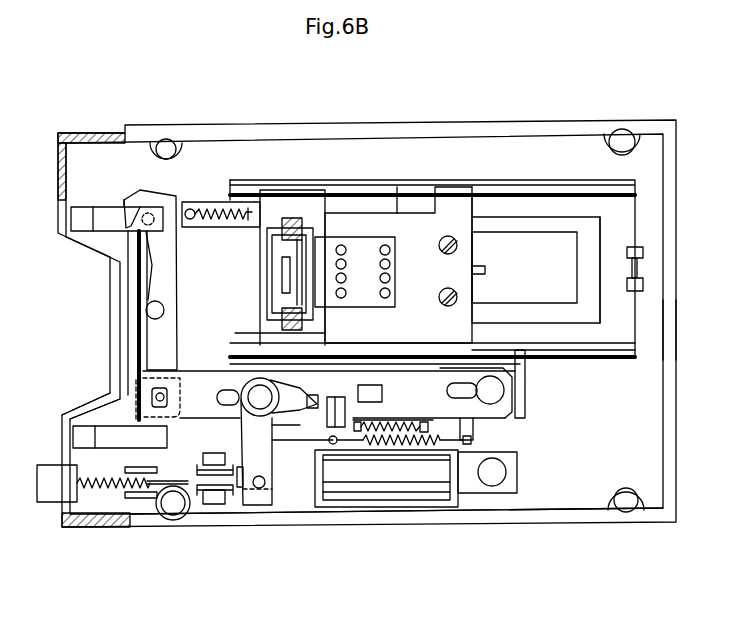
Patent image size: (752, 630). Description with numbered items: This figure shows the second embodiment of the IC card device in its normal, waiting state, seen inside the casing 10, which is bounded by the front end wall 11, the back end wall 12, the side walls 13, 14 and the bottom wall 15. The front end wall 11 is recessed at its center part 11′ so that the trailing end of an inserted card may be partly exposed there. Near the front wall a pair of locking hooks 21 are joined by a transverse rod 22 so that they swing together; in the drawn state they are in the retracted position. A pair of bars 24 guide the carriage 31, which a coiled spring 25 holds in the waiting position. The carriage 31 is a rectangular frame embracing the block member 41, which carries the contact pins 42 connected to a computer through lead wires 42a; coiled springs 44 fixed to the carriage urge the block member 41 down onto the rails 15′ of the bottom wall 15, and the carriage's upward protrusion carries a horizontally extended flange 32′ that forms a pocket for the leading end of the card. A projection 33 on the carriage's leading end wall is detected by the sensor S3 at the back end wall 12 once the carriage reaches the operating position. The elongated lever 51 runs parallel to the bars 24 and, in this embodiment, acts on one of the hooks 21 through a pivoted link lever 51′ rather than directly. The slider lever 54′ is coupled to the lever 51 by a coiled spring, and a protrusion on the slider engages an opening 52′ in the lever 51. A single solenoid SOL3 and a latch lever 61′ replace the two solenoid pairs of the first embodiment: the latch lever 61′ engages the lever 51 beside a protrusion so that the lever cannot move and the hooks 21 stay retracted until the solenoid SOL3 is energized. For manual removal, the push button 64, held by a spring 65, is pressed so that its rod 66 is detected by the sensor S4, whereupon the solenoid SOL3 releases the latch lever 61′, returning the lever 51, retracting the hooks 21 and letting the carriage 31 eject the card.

The casing 10 is at (575, 118).
The front end wall 11 is at (58, 176).
The center part 11′ is at (98, 332).
The back end wall 12 is at (670, 329).
The side wall 13 is at (513, 128).
The side wall 14 is at (498, 515).
The bottom wall 15 is at (630, 416).
The rail 15′ is at (567, 310).
The locking hook 21 is at (83, 220).
The transverse rod 22 is at (133, 371).
The guide bar 24 is at (552, 348).
The coiled spring 25 is at (212, 203).
The carriage 31 is at (418, 202).
The horizontally extended flange 32′ is at (423, 267).
The projection 33 is at (483, 272).
The block member 41 is at (353, 252).
The contact pin 42 is at (344, 294).
The lead wires 42a is at (507, 250).
The coiled spring 44 is at (283, 217).
The elongated lever 51 is at (310, 410).
The link lever 51′ is at (220, 265).
The opening 52′ is at (412, 434).
The slider lever 54′ is at (579, 376).
The latch lever 61′ is at (267, 498).
The push button 64 is at (52, 492).
The spring 65 is at (108, 498).
The rod 66 is at (167, 514).
The sensor S3 is at (637, 267).
The sensor S4 is at (218, 508).
The solenoid SOL3 is at (400, 484).